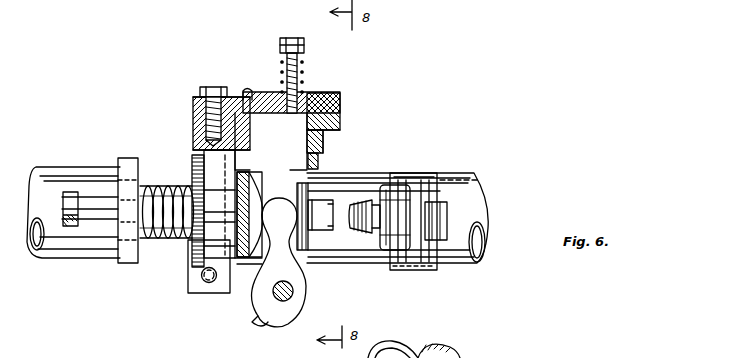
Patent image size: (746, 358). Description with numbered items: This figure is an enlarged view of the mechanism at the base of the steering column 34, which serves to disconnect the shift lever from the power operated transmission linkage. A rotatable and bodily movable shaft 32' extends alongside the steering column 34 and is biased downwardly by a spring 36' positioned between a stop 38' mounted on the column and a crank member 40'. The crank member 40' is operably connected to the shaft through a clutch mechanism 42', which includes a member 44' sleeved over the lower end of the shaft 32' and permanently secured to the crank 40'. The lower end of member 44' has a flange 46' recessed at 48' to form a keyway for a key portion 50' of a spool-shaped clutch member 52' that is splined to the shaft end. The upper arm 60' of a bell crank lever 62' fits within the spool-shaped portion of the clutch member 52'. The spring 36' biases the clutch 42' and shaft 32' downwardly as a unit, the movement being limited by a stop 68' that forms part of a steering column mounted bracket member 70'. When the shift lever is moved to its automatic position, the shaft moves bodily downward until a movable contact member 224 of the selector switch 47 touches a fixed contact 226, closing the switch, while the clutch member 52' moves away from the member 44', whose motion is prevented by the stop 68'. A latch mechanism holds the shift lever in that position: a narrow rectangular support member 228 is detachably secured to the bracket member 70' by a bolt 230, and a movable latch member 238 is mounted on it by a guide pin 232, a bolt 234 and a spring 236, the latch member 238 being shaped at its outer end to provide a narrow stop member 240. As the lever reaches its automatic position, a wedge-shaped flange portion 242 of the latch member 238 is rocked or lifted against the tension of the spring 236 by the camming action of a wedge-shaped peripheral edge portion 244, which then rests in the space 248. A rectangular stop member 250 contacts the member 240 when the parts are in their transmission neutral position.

The shaft 32' is at (73, 212).
The steering column 34 is at (470, 178).
The spring 36' is at (153, 238).
The stop 38' is at (113, 200).
The crank member 40' is at (176, 202).
The clutch mechanism 42' is at (234, 289).
The member 44' is at (189, 271).
The flange 46' is at (251, 206).
The selector switch 47 is at (370, 200).
The recess 48' is at (272, 199).
The key portion 50' is at (287, 202).
The clutch member 52' is at (236, 319).
The upper arm 60' is at (297, 262).
The bell crank lever 62' is at (309, 302).
The stop 68' is at (249, 199).
The bracket member 70' is at (198, 123).
The movable contact member 224 is at (343, 210).
The fixed contact 226 is at (400, 185).
The support member 228 is at (193, 105).
The bolt 230 is at (200, 90).
The guide pin 232 is at (246, 90).
The bolt 234 is at (282, 72).
The spring 236 is at (282, 56).
The movable latch member 238 is at (303, 72).
The stop member 240 is at (340, 105).
The wedge-shaped flange portion 242 is at (308, 100).
The wedge-shaped peripheral edge portion 244 is at (307, 128).
The space 248 is at (340, 120).
The stop member 250 is at (323, 148).